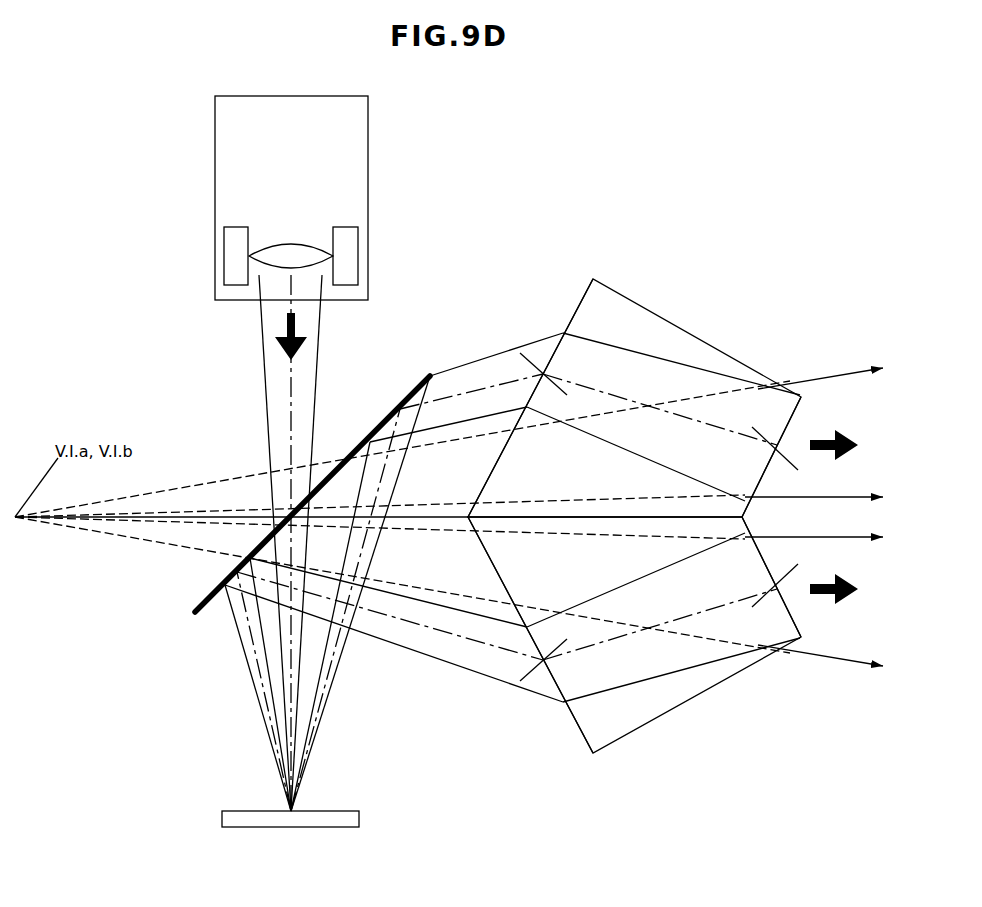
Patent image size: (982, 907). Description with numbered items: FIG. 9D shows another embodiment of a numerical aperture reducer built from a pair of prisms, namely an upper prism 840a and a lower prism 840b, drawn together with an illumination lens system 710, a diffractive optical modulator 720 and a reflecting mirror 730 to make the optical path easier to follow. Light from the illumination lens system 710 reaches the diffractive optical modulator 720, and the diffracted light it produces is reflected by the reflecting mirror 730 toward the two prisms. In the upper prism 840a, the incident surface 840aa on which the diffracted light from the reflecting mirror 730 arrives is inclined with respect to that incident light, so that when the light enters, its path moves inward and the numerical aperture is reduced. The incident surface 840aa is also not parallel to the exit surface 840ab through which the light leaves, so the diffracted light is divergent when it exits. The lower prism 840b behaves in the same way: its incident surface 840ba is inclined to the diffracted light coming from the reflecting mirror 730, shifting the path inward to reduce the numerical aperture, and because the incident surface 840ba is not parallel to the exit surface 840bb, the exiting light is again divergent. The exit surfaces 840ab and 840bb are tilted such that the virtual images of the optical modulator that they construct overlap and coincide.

The illumination lens system 710 is at (368, 152).
The diffractive optical modulator 720 is at (297, 827).
The reflecting mirror 730 is at (414, 396).
The upper prism 840a is at (650, 309).
The incident surface of upper prism 840aa is at (578, 301).
The exit surface of upper prism 840ab is at (800, 408).
The lower prism 840b is at (650, 724).
The incident surface of lower prism 840ba is at (578, 732).
The exit surface of lower prism 840bb is at (800, 626).